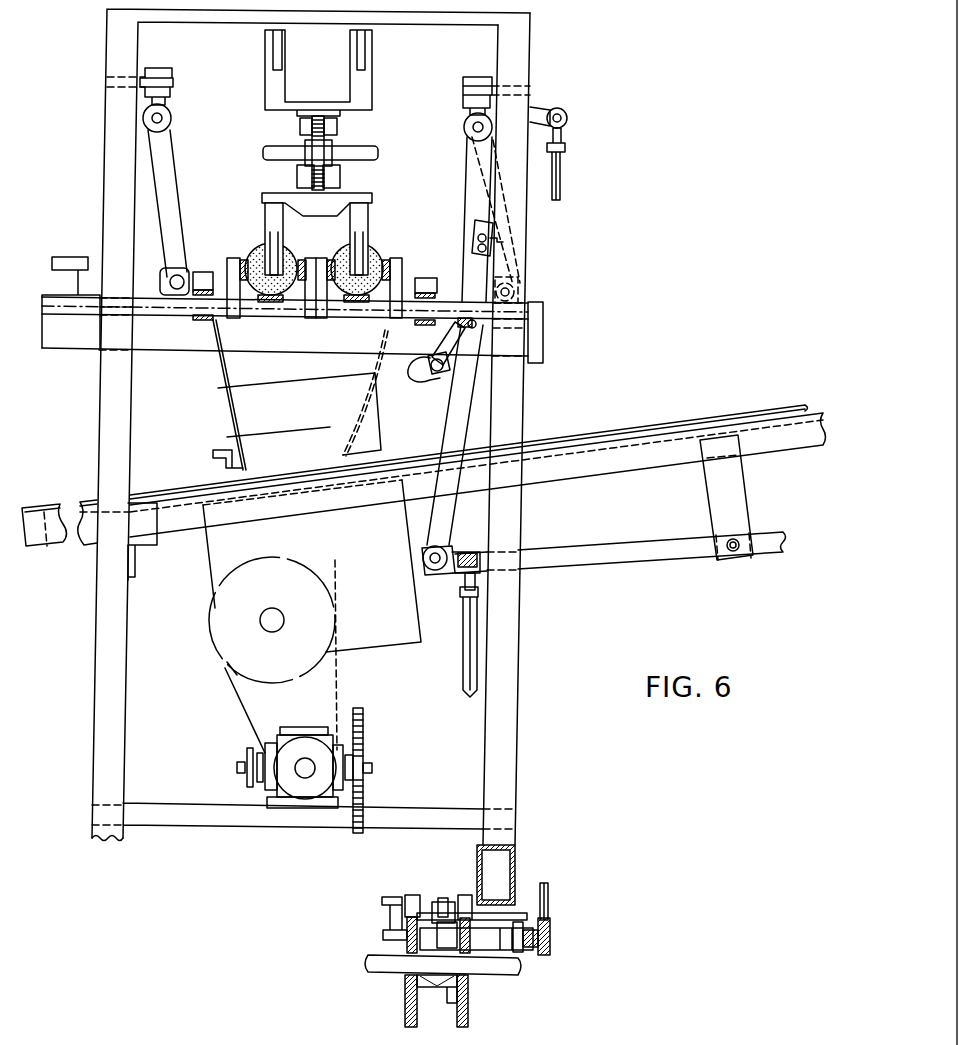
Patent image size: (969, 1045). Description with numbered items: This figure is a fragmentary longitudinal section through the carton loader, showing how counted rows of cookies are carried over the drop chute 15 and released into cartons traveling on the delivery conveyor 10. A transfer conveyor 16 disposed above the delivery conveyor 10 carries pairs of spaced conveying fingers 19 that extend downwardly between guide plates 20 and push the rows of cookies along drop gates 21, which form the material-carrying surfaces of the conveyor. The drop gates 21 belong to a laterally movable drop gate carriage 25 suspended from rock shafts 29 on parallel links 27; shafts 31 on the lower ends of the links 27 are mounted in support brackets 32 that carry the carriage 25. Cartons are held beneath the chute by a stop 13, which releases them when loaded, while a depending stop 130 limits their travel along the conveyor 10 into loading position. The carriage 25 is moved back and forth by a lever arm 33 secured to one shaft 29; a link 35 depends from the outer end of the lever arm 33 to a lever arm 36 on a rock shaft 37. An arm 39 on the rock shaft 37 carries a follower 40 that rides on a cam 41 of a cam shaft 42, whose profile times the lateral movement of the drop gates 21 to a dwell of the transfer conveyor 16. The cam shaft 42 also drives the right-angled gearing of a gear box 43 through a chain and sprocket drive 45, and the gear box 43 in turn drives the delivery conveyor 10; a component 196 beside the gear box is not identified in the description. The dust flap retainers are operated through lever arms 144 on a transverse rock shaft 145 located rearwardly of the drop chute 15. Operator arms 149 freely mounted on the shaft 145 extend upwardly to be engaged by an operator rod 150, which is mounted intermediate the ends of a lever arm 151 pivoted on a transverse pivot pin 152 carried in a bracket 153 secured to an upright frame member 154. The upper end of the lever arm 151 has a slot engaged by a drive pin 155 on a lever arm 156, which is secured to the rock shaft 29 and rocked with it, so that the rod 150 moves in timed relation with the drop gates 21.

The delivery conveyor 10 is at (48, 502).
The stop 13 is at (215, 447).
The drop chute 15 is at (222, 395).
The transfer conveyor 16 is at (363, 195).
The conveying fingers 19 is at (267, 217).
The guide plates 20 is at (242, 258).
The drop gates 21 is at (272, 300).
The drop gate carriage 25 is at (157, 265).
The parallel links 27 is at (180, 190).
The rock shafts 29 is at (147, 118).
The shafts 31 is at (180, 297).
The support brackets 32 is at (160, 283).
The lever arm 33 is at (563, 113).
The link 35 is at (562, 182).
The lever arm 36 is at (553, 917).
The rock shaft 37 is at (550, 940).
The arm 39 is at (387, 920).
The follower 40 is at (410, 895).
The cam 41 is at (407, 1012).
The cam shaft 42 is at (502, 975).
The gear box 43 is at (345, 745).
The chain and sprocket drive 45 is at (363, 795).
The stop 130 is at (255, 392).
The lever arms 144 is at (427, 380).
The transverse rock shaft 145 is at (483, 347).
The operator arms 149 is at (447, 342).
The operator rod 150 is at (476, 325).
The lever arm 151 is at (460, 418).
The transverse pivot pin 152 is at (424, 557).
The bracket 153 is at (473, 248).
The upright frame member 154 is at (540, 763).
The drive pin 155 is at (497, 238).
The lever arm 156 is at (468, 210).
The shaft 196 is at (248, 772).